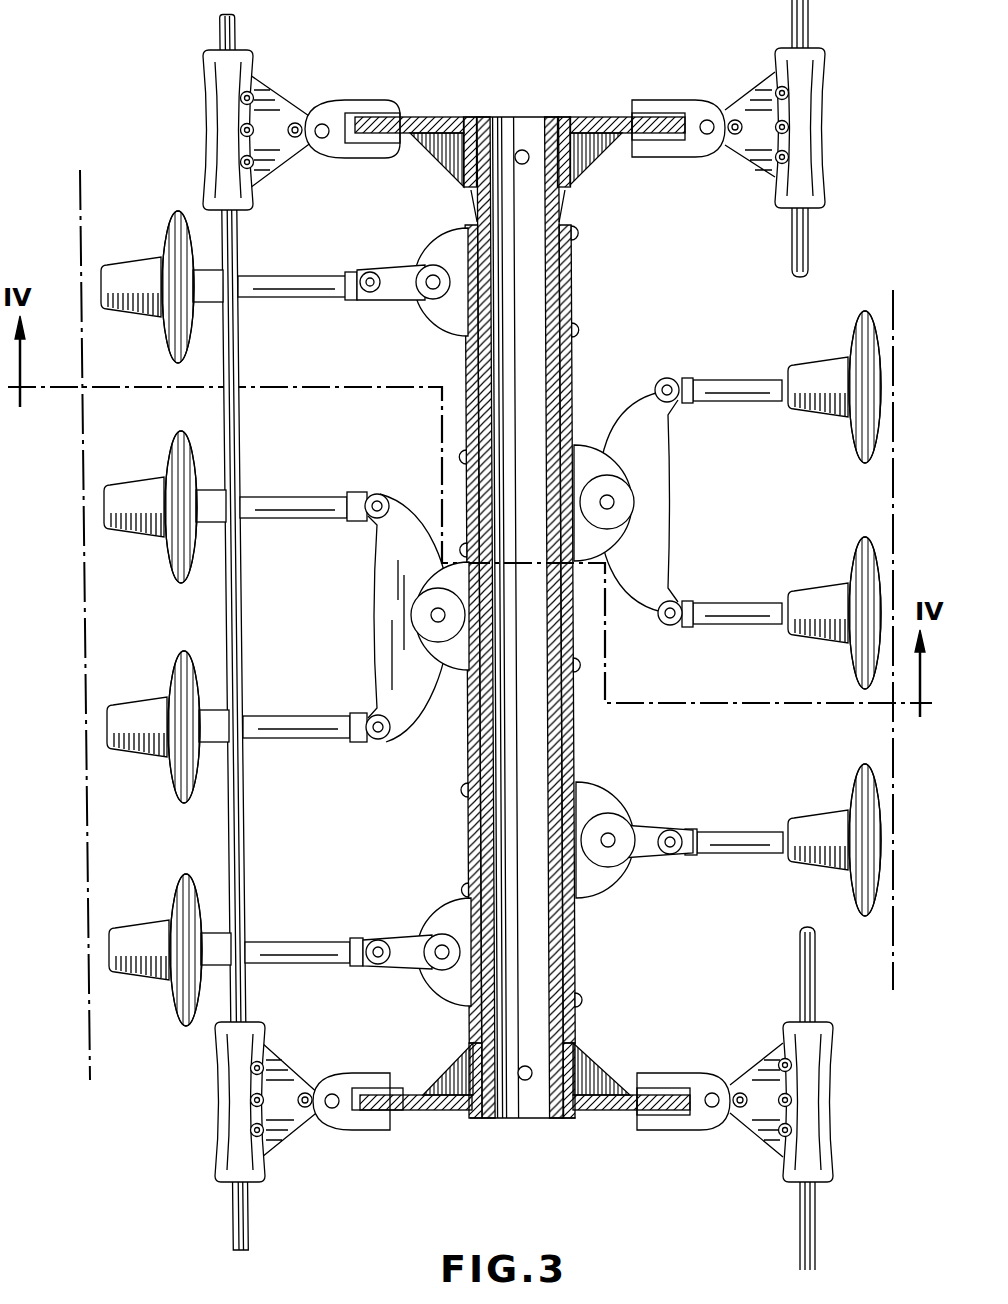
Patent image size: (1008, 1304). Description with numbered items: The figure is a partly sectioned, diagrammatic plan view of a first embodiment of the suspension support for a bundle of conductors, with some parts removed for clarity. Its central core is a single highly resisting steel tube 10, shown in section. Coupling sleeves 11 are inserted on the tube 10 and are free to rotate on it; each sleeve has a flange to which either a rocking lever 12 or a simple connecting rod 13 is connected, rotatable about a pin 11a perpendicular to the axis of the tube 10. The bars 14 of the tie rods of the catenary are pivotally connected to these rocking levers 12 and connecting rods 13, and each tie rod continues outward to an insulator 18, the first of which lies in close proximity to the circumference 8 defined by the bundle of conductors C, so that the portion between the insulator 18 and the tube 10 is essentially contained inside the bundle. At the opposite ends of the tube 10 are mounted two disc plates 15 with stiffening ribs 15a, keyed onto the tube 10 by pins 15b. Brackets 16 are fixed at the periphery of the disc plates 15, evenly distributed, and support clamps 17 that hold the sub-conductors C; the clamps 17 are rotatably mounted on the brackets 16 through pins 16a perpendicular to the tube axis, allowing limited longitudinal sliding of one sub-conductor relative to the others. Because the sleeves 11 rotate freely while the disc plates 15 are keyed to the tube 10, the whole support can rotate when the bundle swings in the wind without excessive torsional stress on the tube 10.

The circumference 8 is at (896, 880).
The steel tube 10 is at (558, 383).
The coupling sleeve 11 is at (572, 305).
The pin 11a is at (611, 500).
The rocking lever 12 is at (393, 596).
The connecting rod 13 is at (402, 300).
The bar 14 is at (322, 272).
The disc plate 15 is at (605, 117).
The stiffening rib 15a is at (445, 140).
The pin 15b is at (523, 150).
The bracket 16 is at (706, 150).
The pin 16a is at (708, 119).
The clamp 17 is at (752, 152).
The insulator 18 is at (138, 305).
The sub-conductor C is at (808, 257).